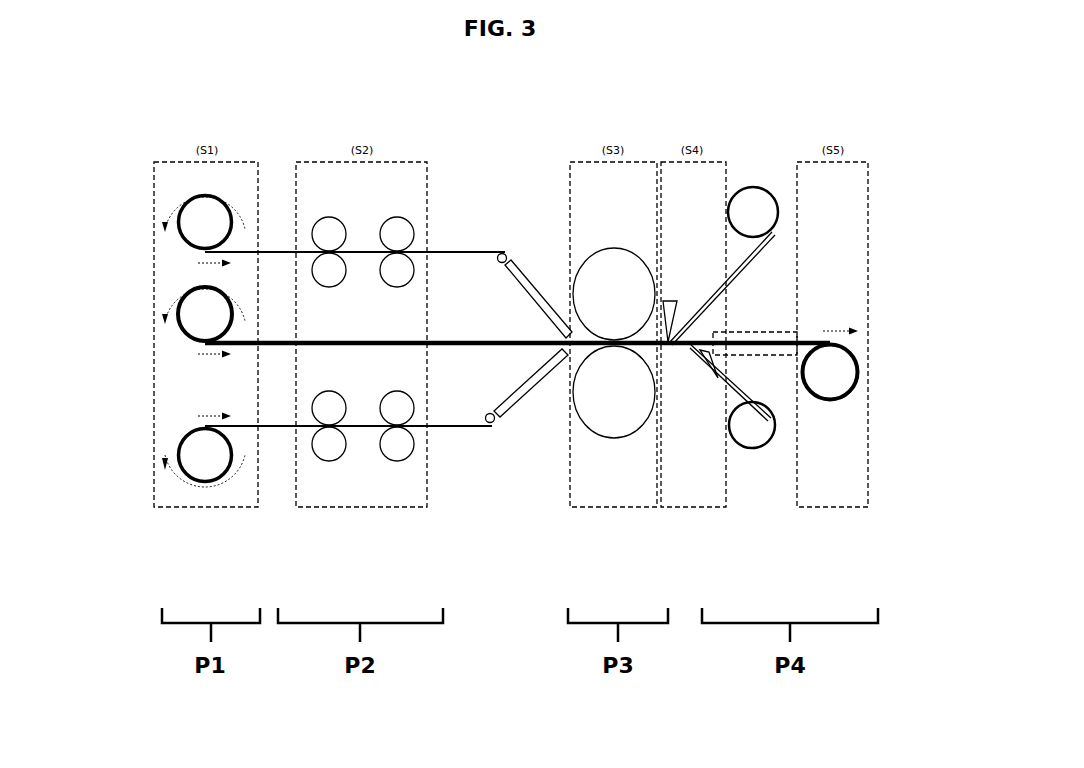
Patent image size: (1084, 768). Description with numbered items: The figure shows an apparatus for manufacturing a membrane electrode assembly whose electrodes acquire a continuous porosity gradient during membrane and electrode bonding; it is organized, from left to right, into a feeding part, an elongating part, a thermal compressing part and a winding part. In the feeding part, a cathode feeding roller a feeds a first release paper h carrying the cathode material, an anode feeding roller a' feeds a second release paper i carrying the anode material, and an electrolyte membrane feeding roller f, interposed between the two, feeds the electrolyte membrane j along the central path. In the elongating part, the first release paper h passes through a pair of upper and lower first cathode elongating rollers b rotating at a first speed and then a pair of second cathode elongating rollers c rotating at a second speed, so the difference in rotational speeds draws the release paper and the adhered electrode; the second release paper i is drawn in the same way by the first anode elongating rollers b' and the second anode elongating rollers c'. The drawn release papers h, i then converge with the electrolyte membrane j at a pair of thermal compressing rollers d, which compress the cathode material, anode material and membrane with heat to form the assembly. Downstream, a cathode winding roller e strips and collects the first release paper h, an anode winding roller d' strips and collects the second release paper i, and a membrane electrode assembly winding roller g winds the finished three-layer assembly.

The cathode feeding roller a is at (158, 253).
The anode feeding roller a' is at (159, 493).
The first cathode elongating rollers b is at (307, 182).
The first anode elongating rollers b' is at (307, 493).
The second cathode elongating rollers c is at (405, 186).
The second anode elongating rollers c' is at (400, 483).
The thermal compressing rollers d is at (597, 231).
The anode winding roller d' is at (740, 453).
The cathode winding roller e is at (752, 187).
The electrolyte membrane feeding roller f is at (185, 333).
The membrane electrode assembly winding roller g is at (855, 397).
The first release paper h is at (278, 252).
The second release paper i is at (273, 427).
The electrolyte membrane j is at (485, 346).